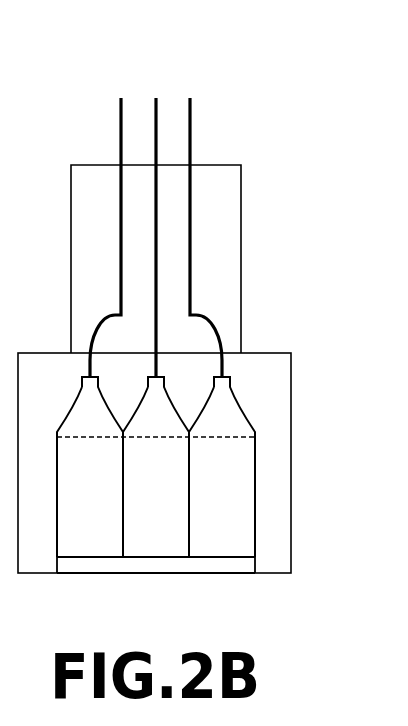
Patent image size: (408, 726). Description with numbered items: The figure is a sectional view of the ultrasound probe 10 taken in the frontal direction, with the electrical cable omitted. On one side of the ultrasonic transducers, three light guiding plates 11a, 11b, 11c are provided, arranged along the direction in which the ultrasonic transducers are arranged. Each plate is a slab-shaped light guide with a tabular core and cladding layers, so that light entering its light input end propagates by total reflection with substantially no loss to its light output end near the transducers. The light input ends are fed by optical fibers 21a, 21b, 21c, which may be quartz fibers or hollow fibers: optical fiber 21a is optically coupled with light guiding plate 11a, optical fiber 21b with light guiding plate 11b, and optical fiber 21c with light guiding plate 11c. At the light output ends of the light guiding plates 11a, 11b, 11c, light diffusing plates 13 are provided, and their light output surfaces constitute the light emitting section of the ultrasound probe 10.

The ultrasound probe 10 is at (241, 240).
The optical fiber 21a is at (120, 117).
The optical fiber 21b is at (157, 117).
The optical fiber 21c is at (192, 117).
The light guiding plate 11a is at (113, 400).
The light guiding plate 11b is at (179, 400).
The light guiding plate 11c is at (245, 400).
The light diffusing plate 13 is at (147, 573).